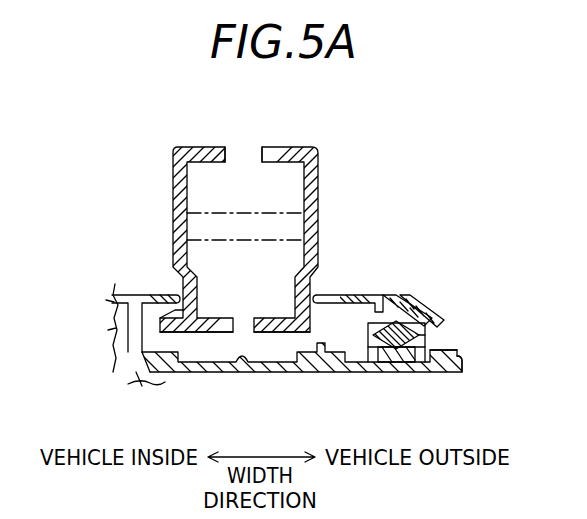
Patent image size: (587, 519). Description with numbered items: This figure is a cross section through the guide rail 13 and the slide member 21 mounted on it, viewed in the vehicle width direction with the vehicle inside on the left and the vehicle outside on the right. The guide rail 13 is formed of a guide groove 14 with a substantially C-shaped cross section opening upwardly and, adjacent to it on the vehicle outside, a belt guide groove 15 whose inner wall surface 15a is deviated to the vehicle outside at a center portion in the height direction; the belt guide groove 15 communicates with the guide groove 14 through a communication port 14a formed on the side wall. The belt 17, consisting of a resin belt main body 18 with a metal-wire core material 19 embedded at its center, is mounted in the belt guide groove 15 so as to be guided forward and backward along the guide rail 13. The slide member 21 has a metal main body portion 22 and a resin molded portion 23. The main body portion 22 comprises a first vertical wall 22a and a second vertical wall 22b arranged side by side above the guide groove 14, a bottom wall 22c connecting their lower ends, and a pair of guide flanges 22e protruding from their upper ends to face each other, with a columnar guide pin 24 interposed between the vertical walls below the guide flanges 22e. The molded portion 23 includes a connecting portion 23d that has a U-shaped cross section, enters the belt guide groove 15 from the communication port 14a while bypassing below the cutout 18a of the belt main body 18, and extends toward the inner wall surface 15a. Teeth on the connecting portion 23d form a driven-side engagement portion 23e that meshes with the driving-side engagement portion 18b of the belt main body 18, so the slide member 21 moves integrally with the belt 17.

The guide rail 13 is at (406, 314).
The guide groove 14 is at (311, 365).
The communication port 14a is at (368, 347).
The belt guide groove 15 is at (392, 348).
The inner wall surface 15a is at (458, 382).
The belt 17 is at (380, 314).
The belt main body 18 is at (393, 318).
The cutout 18a is at (410, 348).
The driving-side engagement portion 18b is at (414, 318).
The core material 19 is at (368, 304).
The slide member 21 is at (250, 221).
The main body portion 22 is at (250, 211).
The first vertical wall 22a is at (173, 222).
The second vertical wall 22b is at (318, 199).
The bottom wall 22c is at (224, 318).
The guide flanges 22e is at (282, 145).
The molded portion 23 is at (168, 295).
The connecting portion 23d is at (434, 322).
The driven-side engagement portion 23e is at (426, 333).
The guide pin 24 is at (208, 213).